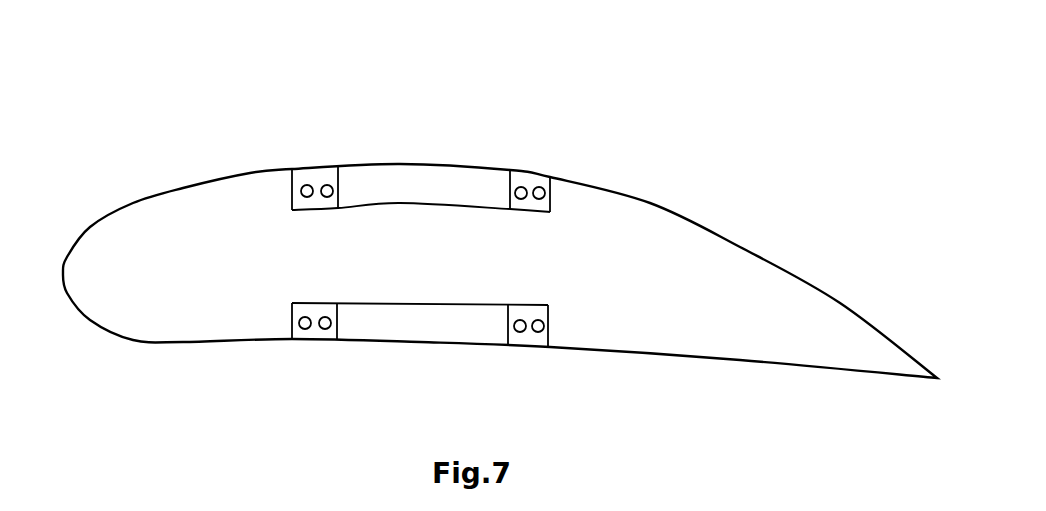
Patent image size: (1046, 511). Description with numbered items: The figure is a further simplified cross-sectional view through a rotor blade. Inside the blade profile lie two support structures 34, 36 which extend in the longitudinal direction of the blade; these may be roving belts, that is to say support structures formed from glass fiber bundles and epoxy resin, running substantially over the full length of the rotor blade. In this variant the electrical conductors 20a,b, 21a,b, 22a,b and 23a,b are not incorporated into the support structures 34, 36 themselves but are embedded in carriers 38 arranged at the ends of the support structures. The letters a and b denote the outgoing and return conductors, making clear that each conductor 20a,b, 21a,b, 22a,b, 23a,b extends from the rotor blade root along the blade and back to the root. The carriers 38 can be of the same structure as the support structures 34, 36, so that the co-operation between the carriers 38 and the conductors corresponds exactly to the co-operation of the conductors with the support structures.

The electrical conductor (outgoing and return) 20a,b is at (323, 185).
The electrical conductor (outgoing and return) 21a,b is at (323, 330).
The electrical conductor (outgoing and return) 22a,b is at (537, 187).
The electrical conductor (outgoing and return) 23a,b is at (536, 333).
The support structure 34 is at (443, 190).
The support structure 36 is at (437, 317).
The carrier 38 is at (297, 200).